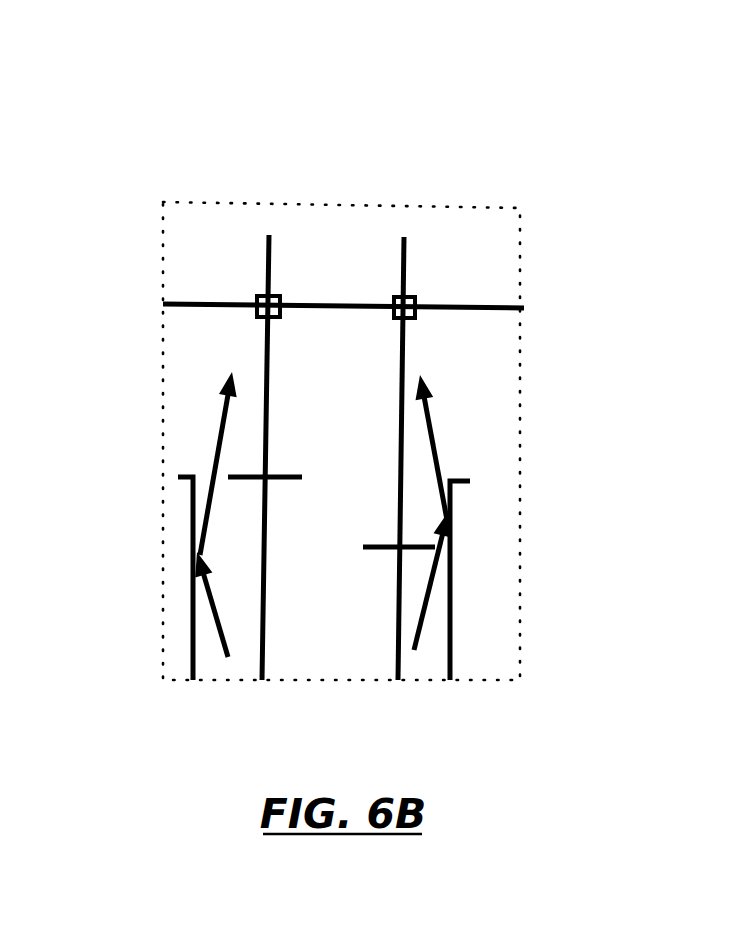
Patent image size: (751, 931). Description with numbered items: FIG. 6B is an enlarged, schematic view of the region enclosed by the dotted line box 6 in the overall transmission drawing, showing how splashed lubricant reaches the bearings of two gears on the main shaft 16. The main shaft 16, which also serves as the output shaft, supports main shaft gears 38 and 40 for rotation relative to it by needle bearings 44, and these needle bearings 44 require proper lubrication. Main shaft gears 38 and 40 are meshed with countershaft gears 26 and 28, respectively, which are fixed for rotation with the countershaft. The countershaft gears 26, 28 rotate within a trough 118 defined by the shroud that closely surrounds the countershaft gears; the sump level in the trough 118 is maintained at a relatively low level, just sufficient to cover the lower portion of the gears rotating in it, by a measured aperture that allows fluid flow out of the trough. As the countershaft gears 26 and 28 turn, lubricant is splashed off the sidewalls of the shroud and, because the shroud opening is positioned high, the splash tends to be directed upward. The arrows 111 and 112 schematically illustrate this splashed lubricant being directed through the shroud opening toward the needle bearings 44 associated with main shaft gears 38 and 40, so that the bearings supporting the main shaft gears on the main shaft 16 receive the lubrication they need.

The dotted line box 6 is at (532, 380).
The main shaft 16 is at (470, 306).
The countershaft gear 26 is at (266, 563).
The countershaft gear 28 is at (397, 630).
The main shaft gear 38 is at (268, 408).
The main shaft gear 40 is at (398, 453).
The needle bearings 44 is at (257, 300).
The arrow 111 is at (215, 442).
The arrow 112 is at (423, 447).
The trough 118 is at (452, 570).